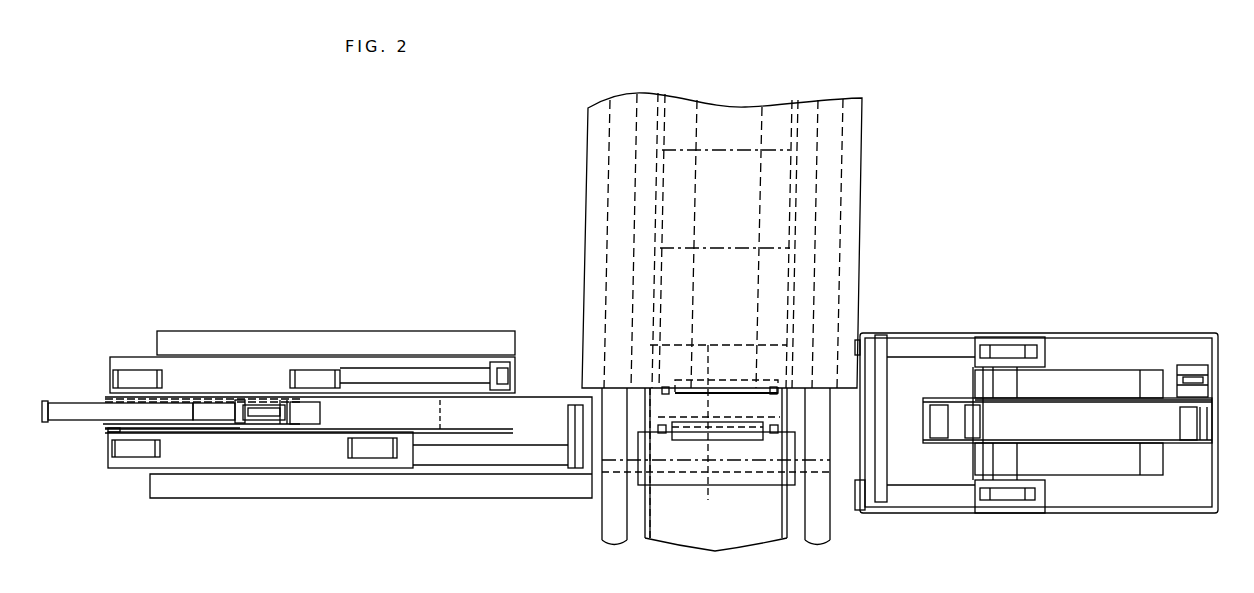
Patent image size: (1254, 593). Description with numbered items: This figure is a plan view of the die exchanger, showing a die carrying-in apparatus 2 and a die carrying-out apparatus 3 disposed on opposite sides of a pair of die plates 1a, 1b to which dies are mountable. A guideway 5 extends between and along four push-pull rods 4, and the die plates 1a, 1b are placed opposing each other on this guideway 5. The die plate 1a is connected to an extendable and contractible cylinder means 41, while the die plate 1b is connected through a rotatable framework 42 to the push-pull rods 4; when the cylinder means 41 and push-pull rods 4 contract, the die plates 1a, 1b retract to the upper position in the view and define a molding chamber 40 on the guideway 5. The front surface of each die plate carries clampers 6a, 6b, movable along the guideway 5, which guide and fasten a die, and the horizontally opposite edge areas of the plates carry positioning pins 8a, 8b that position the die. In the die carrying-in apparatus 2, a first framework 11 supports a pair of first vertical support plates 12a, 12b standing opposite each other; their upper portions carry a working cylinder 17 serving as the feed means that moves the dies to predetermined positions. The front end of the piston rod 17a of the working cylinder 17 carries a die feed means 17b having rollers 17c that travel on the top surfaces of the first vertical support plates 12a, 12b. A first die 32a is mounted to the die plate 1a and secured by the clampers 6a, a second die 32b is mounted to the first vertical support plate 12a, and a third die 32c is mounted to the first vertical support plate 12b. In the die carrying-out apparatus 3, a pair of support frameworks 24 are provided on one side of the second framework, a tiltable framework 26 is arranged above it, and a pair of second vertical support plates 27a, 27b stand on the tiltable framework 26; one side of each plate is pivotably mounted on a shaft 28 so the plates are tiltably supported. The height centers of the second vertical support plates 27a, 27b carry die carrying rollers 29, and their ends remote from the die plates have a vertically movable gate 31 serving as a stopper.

The die carrying-in apparatus 2 is at (348, 298).
The die carrying-out apparatus 3 is at (1063, 295).
The push-pull rods 4 is at (606, 483).
The guideway 5 is at (680, 524).
The clamper 6a is at (710, 380).
The clamper 6b is at (708, 486).
The positioning pins 8a is at (664, 390).
The positioning pins 8b is at (660, 420).
The first framework 11 is at (330, 468).
The first vertical support plate 12a is at (258, 385).
The first vertical support plate 12b is at (251, 450).
The working cylinder 17 is at (86, 424).
The piston rod 17a is at (274, 428).
The die feed means 17b is at (312, 404).
The rollers 17c is at (306, 461).
The support frameworks 24 is at (1008, 348).
The tiltable framework 26 is at (1118, 375).
The second vertical support plate 27a is at (1048, 395).
The second vertical support plate 27b is at (1048, 450).
The shaft 28 is at (1043, 512).
The die carrying rollers 29 is at (926, 427).
The vertically movable gate 31 is at (1205, 433).
The first die 32a is at (720, 348).
The second die 32b is at (398, 392).
The third die 32c is at (136, 455).
The molding chamber 40 is at (736, 150).
The cylinder means 41 is at (755, 285).
The rotatable framework 42 is at (797, 480).
The die plate 1a is at (790, 325).
The die plate 1b is at (748, 483).